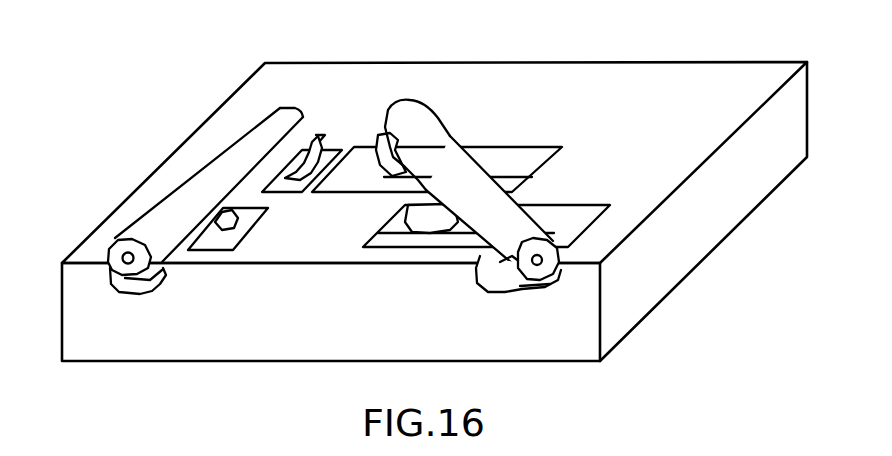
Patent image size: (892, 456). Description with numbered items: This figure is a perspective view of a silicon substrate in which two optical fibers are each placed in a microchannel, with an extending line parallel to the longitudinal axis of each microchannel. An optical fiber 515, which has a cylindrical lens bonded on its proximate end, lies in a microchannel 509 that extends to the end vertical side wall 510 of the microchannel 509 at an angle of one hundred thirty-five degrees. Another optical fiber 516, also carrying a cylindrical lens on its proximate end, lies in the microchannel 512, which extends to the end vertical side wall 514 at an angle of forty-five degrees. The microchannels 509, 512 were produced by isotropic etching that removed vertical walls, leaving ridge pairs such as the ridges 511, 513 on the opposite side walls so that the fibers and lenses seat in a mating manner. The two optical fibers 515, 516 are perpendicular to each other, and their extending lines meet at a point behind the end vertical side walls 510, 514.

The microchannel 509 is at (103, 243).
The end vertical side wall 510 is at (296, 173).
The ridge 511 is at (229, 216).
The microchannel 512 is at (556, 248).
The ridge 513 is at (426, 196).
The end vertical side wall 514 is at (388, 125).
The optical fiber 515 is at (172, 222).
The optical fiber 516 is at (458, 180).